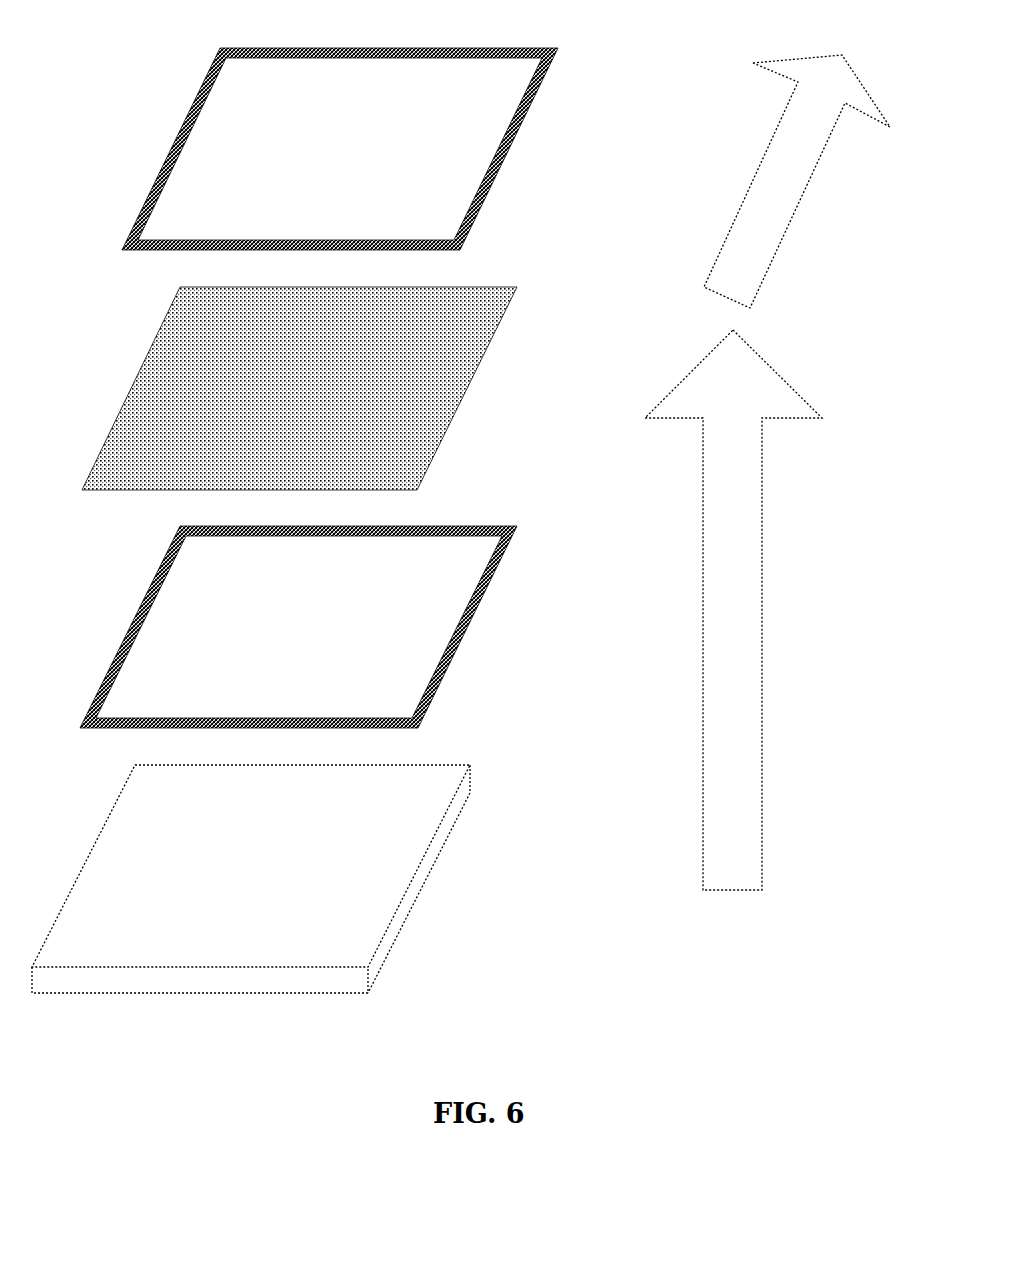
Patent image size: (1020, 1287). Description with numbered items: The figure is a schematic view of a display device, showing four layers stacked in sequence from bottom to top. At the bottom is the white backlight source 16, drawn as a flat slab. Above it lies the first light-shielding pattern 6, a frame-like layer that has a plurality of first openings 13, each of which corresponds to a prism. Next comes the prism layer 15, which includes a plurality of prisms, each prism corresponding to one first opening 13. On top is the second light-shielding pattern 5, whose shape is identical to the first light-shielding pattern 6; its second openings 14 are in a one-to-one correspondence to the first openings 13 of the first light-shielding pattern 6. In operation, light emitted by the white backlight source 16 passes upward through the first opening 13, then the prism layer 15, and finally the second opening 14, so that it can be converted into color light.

The second light-shielding pattern 5 is at (487, 195).
The second openings 14 is at (467, 142).
The prism layer 15 is at (420, 405).
The first light-shielding pattern 6 is at (432, 703).
The first openings 13 is at (420, 642).
The white backlight source 16 is at (390, 878).